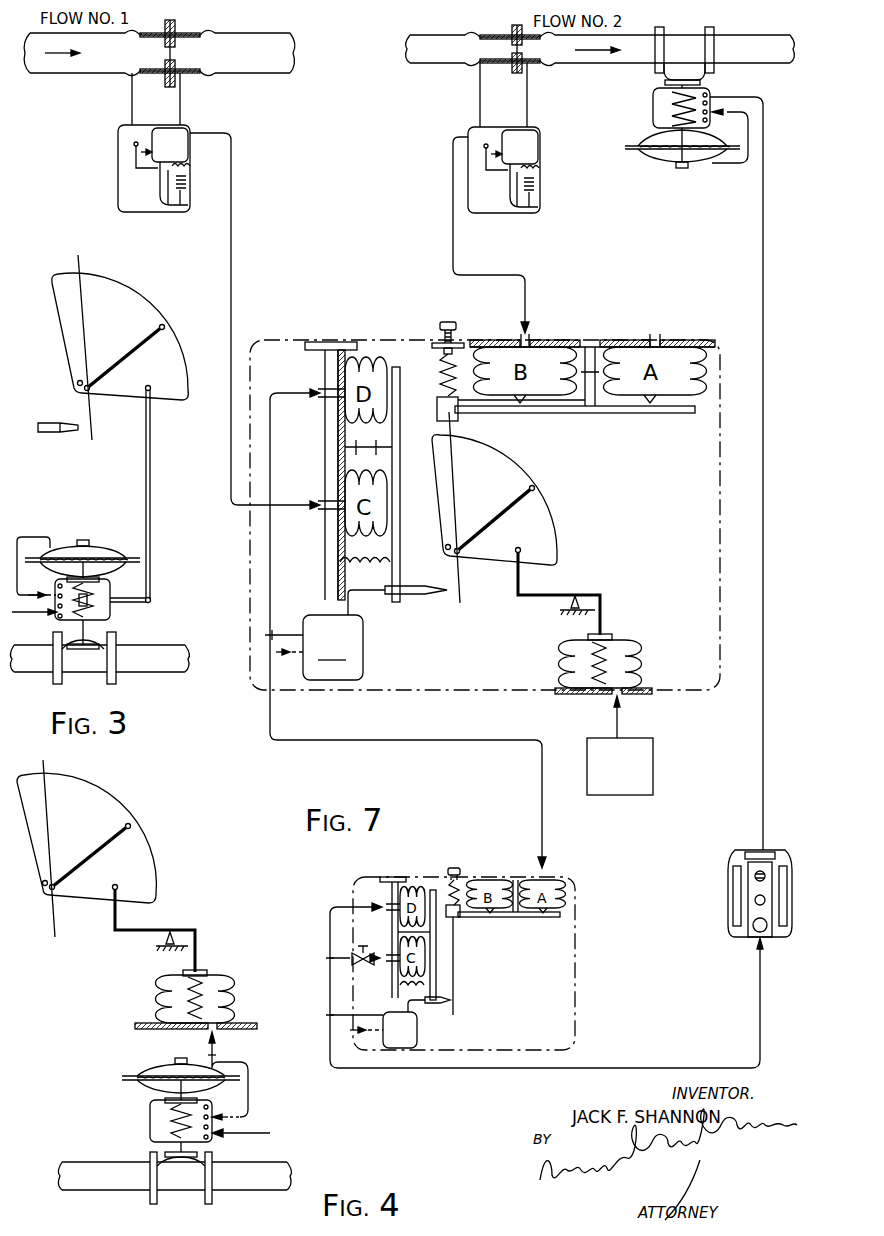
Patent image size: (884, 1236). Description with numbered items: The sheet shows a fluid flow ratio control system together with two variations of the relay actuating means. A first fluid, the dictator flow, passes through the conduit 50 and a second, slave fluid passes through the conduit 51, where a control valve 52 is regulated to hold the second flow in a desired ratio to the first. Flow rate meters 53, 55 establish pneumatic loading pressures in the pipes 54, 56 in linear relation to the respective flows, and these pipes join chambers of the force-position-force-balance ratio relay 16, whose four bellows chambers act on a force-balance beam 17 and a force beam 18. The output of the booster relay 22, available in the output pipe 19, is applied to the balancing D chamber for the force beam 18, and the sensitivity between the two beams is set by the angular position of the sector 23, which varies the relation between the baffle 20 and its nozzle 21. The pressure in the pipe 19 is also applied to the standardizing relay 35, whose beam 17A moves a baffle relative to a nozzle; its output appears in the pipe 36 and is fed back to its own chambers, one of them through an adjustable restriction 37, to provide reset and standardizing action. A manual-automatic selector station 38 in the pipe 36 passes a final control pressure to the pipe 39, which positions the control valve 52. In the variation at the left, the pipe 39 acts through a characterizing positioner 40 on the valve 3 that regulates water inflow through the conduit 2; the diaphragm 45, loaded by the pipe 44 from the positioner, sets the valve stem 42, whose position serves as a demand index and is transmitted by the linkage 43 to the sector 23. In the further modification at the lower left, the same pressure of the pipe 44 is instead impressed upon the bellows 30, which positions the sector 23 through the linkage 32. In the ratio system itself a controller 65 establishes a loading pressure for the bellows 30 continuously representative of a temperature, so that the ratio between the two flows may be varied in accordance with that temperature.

In FIG. 3, the conduit 2 is at (172, 645).
In FIG. 3, the valve 3 is at (133, 643).
In FIG. 7, the force-position-force-balance relay 16 is at (400, 340).
In FIG. 7, the force-balance beam 17 is at (597, 413).
In FIG. 7, the beam 17A is at (493, 917).
In FIG. 7, the force beam 18 is at (400, 405).
In FIG. 7, the output pipe 19 is at (272, 597).
In FIG. 3, the baffle 20 is at (92, 428).
In FIG. 3, the nozzle 21 is at (70, 435).
In FIG. 7, the booster relay 22 is at (333, 647).
In FIG. 7, the sector 23 is at (557, 527).
In FIG. 3, the sector 23 is at (144, 290).
In FIG. 4, the sector 23 is at (157, 862).
In FIG. 7, the bellows 30 is at (641, 656).
In FIG. 4, the bellows 30 is at (155, 996).
In FIG. 7, the linkage 32 is at (563, 593).
In FIG. 7, the standardizing relay 35 is at (575, 973).
In FIG. 7, the output pipe 36 is at (635, 1068).
In FIG. 7, the adjustable restriction 37 is at (361, 966).
In FIG. 7, the manual-automatic selector station 38 is at (727, 892).
In FIG. 7, the pipe 39 is at (763, 240).
In FIG. 3, the pipe 39 is at (16, 616).
In FIG. 3, the positioner 40 is at (112, 612).
In FIG. 3, the valve stem 42 is at (88, 566).
In FIG. 4, the valve stem 42 is at (170, 1085).
In FIG. 3, the linkage 43 is at (146, 490).
In FIG. 3, the pipe 44 is at (33, 537).
In FIG. 4, the pipe 44 is at (250, 1078).
In FIG. 3, the diaphragm 45 is at (105, 557).
In FIG. 4, the diaphragm 45 is at (160, 1073).
In FIG. 7, the conduit 50 is at (250, 78).
In FIG. 7, the conduit 51 is at (578, 65).
In FIG. 7, the control valve 52 is at (643, 124).
In FIG. 7, the flow rate meter 53 is at (118, 149).
In FIG. 7, the pipe 54 is at (231, 284).
In FIG. 7, the flow rate meter 55 is at (540, 170).
In FIG. 7, the pipe 56 is at (453, 233).
In FIG. 7, the controller 65 is at (657, 773).